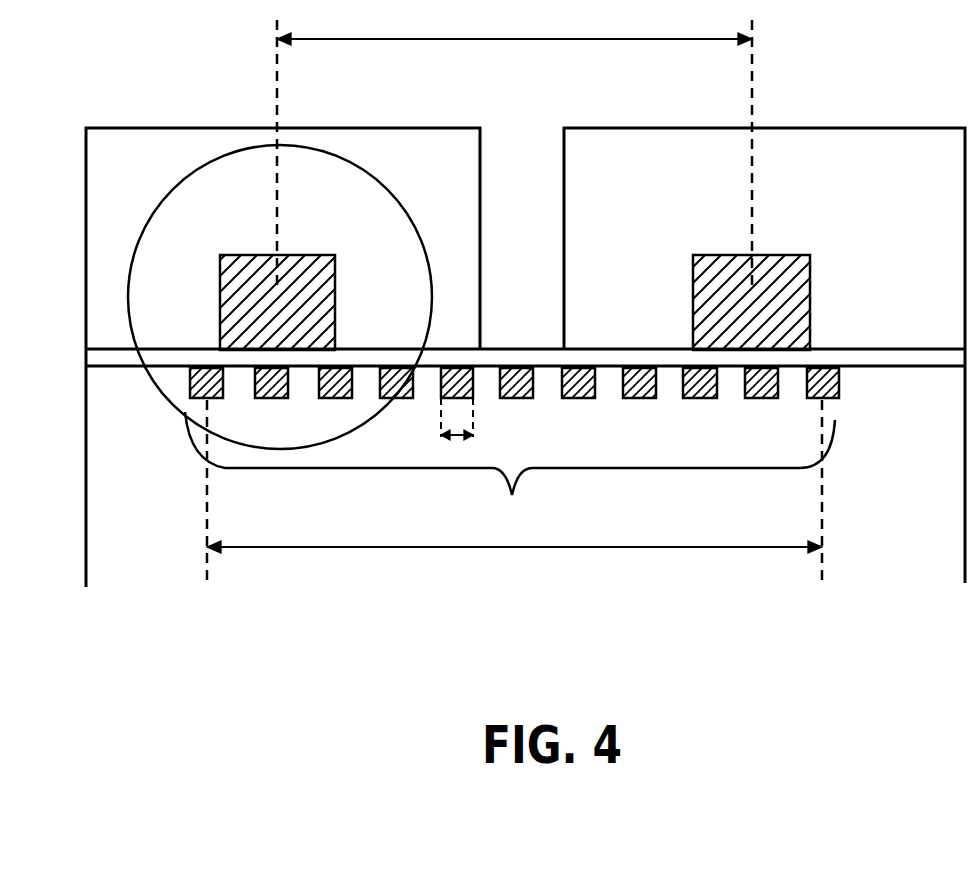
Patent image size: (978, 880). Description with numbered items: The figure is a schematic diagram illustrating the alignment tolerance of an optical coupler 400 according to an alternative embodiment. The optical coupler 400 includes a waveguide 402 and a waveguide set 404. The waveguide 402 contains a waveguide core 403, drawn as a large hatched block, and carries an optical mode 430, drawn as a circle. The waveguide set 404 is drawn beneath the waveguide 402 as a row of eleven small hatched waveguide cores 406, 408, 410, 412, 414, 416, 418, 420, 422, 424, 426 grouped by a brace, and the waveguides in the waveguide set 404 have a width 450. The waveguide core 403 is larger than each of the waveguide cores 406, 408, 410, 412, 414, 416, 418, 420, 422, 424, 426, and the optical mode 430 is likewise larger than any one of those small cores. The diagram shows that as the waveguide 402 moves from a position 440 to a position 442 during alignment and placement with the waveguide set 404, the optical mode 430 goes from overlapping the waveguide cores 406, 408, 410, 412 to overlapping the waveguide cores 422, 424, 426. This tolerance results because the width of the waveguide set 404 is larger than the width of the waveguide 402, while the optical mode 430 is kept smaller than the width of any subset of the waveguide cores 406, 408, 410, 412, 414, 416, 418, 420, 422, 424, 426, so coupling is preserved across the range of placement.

The optical coupler 400 is at (816, 674).
The waveguide 402 is at (86, 165).
The waveguide core 403 is at (220, 304).
The waveguide set 404 is at (510, 470).
The waveguide core 406 is at (214, 398).
The waveguide core 408 is at (275, 398).
The waveguide core 410 is at (340, 398).
The waveguide core 412 is at (396, 398).
The waveguide core 414 is at (464, 367).
The waveguide core 416 is at (518, 367).
The waveguide core 418 is at (575, 398).
The waveguide core 420 is at (640, 398).
The waveguide core 422 is at (702, 398).
The waveguide core 424 is at (762, 398).
The waveguide core 426 is at (827, 367).
The optical mode 430 is at (376, 181).
The position 440 is at (277, 57).
The position 442 is at (753, 57).
The width 450 is at (500, 548).